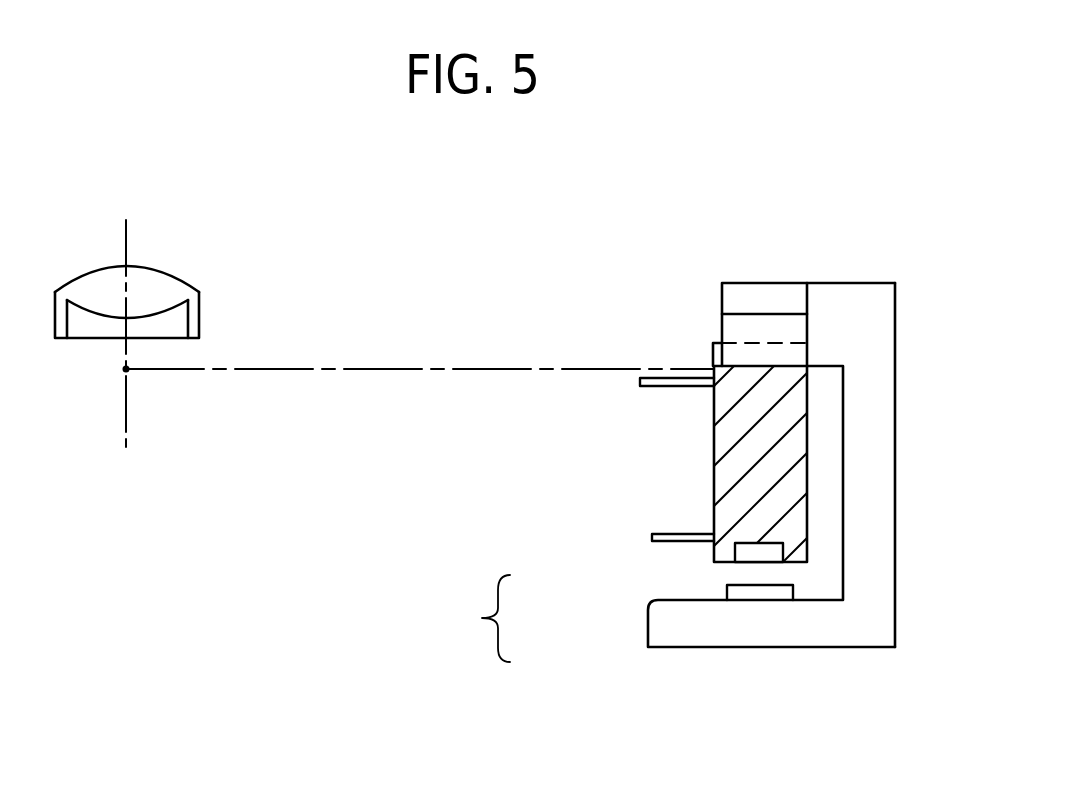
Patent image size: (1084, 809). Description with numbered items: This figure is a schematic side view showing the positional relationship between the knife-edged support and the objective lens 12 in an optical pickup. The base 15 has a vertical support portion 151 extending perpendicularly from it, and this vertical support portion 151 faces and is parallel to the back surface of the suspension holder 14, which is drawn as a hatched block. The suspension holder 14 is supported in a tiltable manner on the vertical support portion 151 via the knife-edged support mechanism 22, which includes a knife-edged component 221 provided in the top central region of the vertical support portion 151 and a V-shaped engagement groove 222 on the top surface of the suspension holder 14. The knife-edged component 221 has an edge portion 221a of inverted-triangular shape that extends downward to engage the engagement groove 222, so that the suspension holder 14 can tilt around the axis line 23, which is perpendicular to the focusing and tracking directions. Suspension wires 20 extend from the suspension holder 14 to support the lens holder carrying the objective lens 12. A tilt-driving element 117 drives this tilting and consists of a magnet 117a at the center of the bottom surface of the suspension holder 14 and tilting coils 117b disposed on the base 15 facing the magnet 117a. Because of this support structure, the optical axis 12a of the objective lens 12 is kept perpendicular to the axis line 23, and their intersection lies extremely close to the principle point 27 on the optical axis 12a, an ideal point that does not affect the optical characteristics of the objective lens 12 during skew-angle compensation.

The objective lens 12 is at (183, 276).
The optical axis 12a is at (128, 237).
The principle point 27 is at (120, 370).
The axis line 23 is at (427, 367).
The knife-edged support mechanism 22 is at (753, 283).
The knife-edged component 221 is at (735, 297).
The edge portion 221a is at (722, 329).
The engagement groove 222 is at (713, 357).
The suspension holder 14 is at (716, 452).
The suspension wires 20 is at (640, 387).
The tilt-driving element 117 is at (472, 618).
The magnet 117a is at (743, 552).
The tilting coils 117b is at (728, 585).
The base 15 is at (780, 647).
The vertical support portion 151 is at (882, 408).